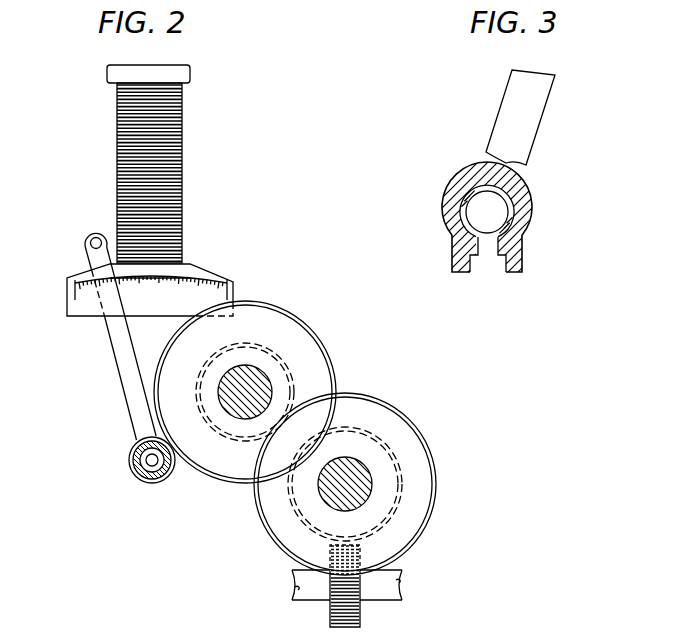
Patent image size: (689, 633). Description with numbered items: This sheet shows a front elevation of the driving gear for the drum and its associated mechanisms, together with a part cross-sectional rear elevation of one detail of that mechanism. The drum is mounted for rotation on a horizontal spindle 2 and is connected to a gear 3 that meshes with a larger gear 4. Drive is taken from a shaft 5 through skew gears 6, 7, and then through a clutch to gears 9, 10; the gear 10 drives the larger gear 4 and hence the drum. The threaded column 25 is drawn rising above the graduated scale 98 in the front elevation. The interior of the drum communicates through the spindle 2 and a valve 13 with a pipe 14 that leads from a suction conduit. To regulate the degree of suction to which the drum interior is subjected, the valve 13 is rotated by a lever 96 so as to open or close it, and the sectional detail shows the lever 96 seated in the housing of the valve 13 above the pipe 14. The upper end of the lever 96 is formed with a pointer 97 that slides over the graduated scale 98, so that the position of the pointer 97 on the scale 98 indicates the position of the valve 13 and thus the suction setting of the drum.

In FIG. 2, the horizontal spindle 2 is at (133, 476).
In FIG. 2, the gear 3 is at (158, 485).
In FIG. 2, the larger gear 4 is at (335, 377).
In FIG. 2, the shaft 5 is at (392, 592).
In FIG. 2, the skew gear 6 is at (332, 603).
In FIG. 2, the skew gear 7 is at (402, 468).
In FIG. 2, the gear 9 is at (428, 517).
In FIG. 2, the gear 10 is at (275, 352).
In FIG. 3, the valve 13 is at (515, 213).
In FIG. 3, the pipe 14 is at (495, 262).
In FIG. 2, the threaded column 25 is at (173, 150).
In FIG. 2, the lever 96 is at (122, 367).
In FIG. 3, the lever 96 is at (508, 123).
In FIG. 2, the pointer 97 is at (85, 256).
In FIG. 2, the graduated scale 98 is at (83, 308).